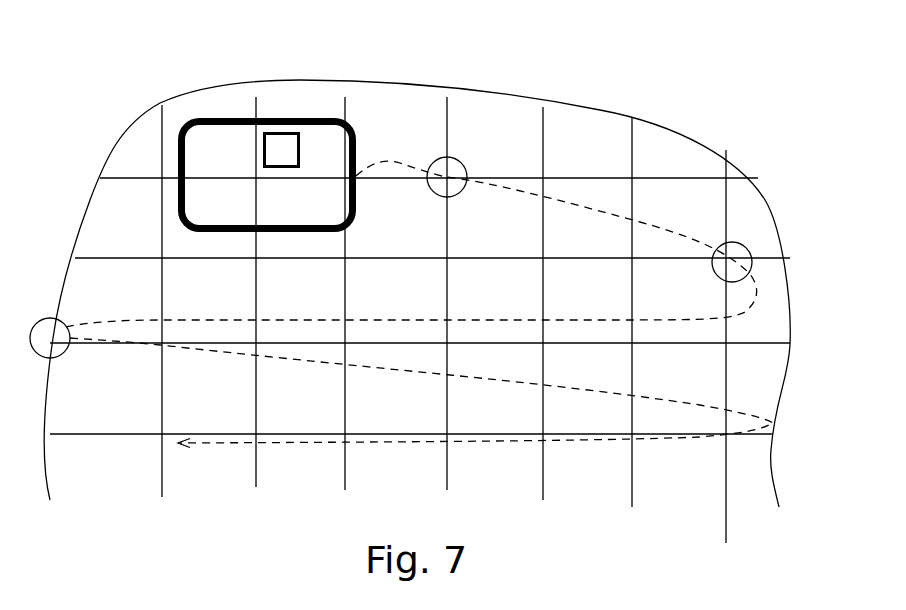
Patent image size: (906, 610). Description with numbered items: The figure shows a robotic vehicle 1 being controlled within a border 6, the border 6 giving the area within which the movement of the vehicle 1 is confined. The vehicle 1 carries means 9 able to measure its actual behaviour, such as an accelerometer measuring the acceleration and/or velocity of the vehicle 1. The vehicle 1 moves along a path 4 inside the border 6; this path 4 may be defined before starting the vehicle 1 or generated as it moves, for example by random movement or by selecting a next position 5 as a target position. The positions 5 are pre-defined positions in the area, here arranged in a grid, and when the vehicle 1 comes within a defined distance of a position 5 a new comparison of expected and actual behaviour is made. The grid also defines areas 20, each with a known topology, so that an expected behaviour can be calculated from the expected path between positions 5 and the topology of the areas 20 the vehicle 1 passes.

The vehicle 1 is at (318, 116).
The path 4 is at (512, 165).
The positions 5 is at (716, 274).
The border 6 is at (43, 448).
The means for measuring actual behaviour 9 is at (262, 146).
The areas 20 is at (201, 418).